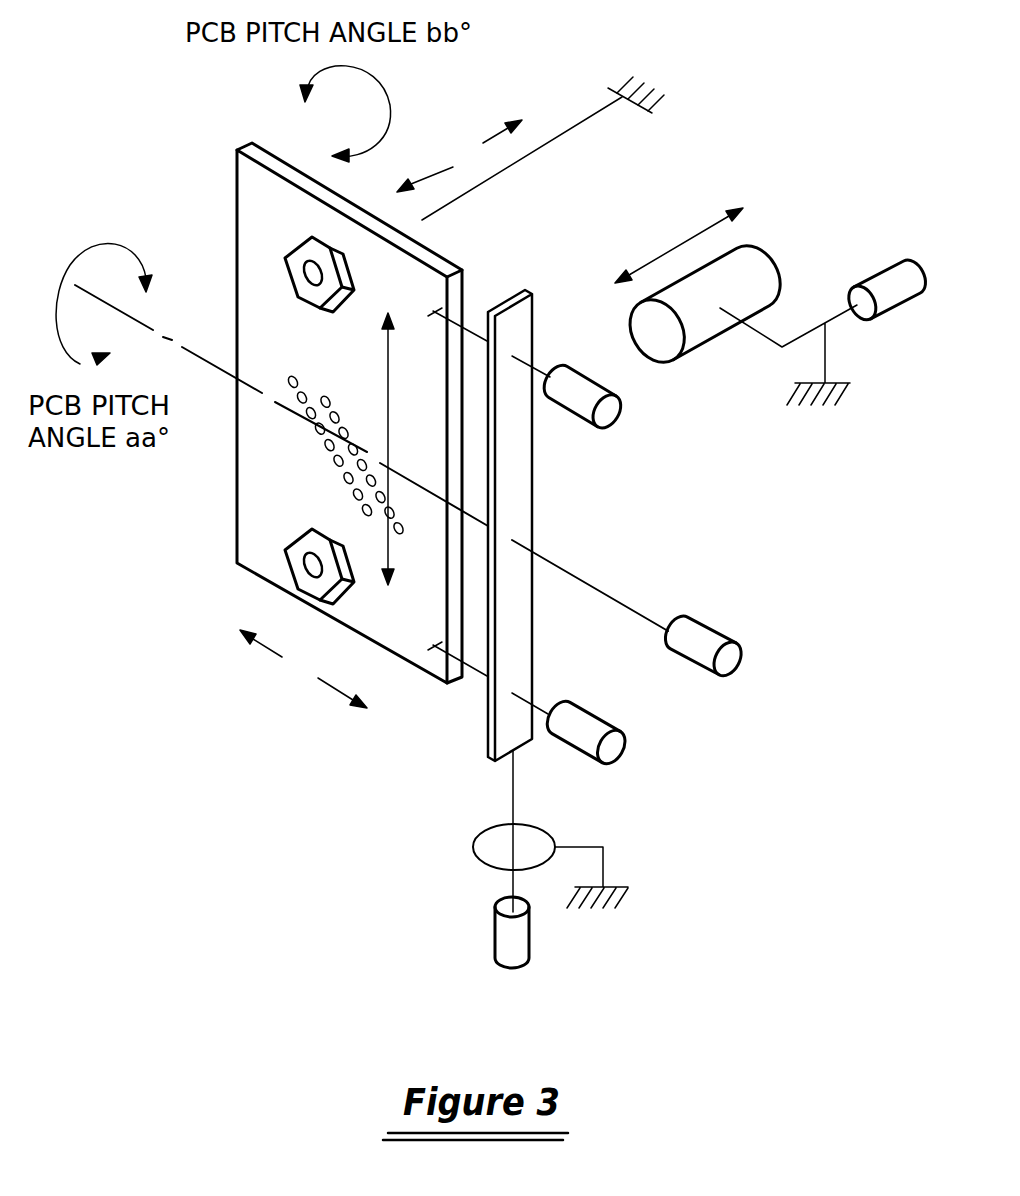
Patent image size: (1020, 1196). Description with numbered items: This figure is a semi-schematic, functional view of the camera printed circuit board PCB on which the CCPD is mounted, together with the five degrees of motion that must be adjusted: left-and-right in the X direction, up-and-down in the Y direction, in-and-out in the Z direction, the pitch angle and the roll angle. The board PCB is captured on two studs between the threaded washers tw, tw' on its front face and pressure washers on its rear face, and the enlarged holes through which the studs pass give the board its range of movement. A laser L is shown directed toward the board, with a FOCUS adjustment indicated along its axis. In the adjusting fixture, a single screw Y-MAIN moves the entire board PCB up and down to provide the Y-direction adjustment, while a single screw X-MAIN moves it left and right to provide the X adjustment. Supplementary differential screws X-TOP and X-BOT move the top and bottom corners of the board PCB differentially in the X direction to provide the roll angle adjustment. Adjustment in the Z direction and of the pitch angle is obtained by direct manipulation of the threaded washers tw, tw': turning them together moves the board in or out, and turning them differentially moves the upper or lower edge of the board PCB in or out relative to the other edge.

The printed circuit board PCB is at (237, 530).
The threaded washer tw is at (243, 231).
The threaded washer tw' is at (258, 590).
The laser L is at (758, 255).
The focus adjustment direction FOCUS is at (659, 245).
The Z-direction Z is at (509, 158).
The X-direction X is at (303, 669).
The supplementary differential screw X-TOP is at (568, 379).
The X-main screw X-MAIN is at (750, 652).
The supplementary differential screw X-BOT is at (569, 715).
The Y-main screw Y-MAIN is at (509, 952).